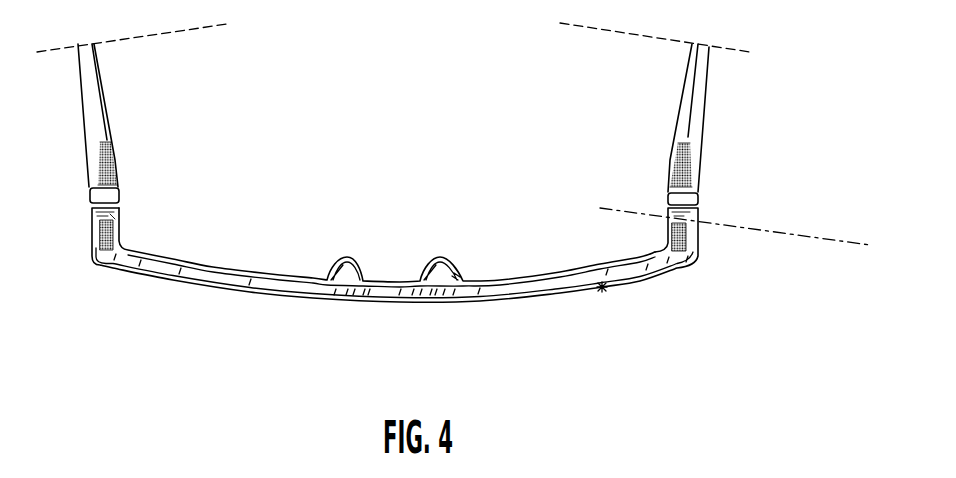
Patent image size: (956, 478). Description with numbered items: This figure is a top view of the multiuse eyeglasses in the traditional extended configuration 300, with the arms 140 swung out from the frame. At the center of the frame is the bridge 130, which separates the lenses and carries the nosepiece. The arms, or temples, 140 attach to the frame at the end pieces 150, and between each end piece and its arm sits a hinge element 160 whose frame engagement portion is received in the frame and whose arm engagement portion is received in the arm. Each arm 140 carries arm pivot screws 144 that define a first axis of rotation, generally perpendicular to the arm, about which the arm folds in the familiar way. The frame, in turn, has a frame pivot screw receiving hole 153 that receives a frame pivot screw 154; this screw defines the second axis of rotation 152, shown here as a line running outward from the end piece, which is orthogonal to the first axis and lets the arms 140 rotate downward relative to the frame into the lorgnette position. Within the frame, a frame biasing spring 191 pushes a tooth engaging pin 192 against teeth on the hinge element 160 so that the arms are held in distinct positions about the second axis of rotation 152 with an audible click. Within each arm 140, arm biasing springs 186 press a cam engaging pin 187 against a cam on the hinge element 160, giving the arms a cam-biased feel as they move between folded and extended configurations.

The bridge 130 is at (398, 291).
The arms 140 is at (697, 97).
The arm pivot screws 144 is at (115, 118).
The end pieces 150 is at (678, 272).
The second axis of rotation 152 is at (840, 240).
The frame pivot screw receiving hole 153 is at (200, 200).
The frame pivot screw 154 is at (113, 213).
The hinge element 160 is at (112, 197).
The arm biasing springs 186 is at (155, 125).
The cam engaging pin 187 is at (118, 161).
The frame biasing spring 191 is at (200, 235).
The tooth engaging pin 192 is at (117, 240).
The traditional extended configuration 300 is at (602, 294).